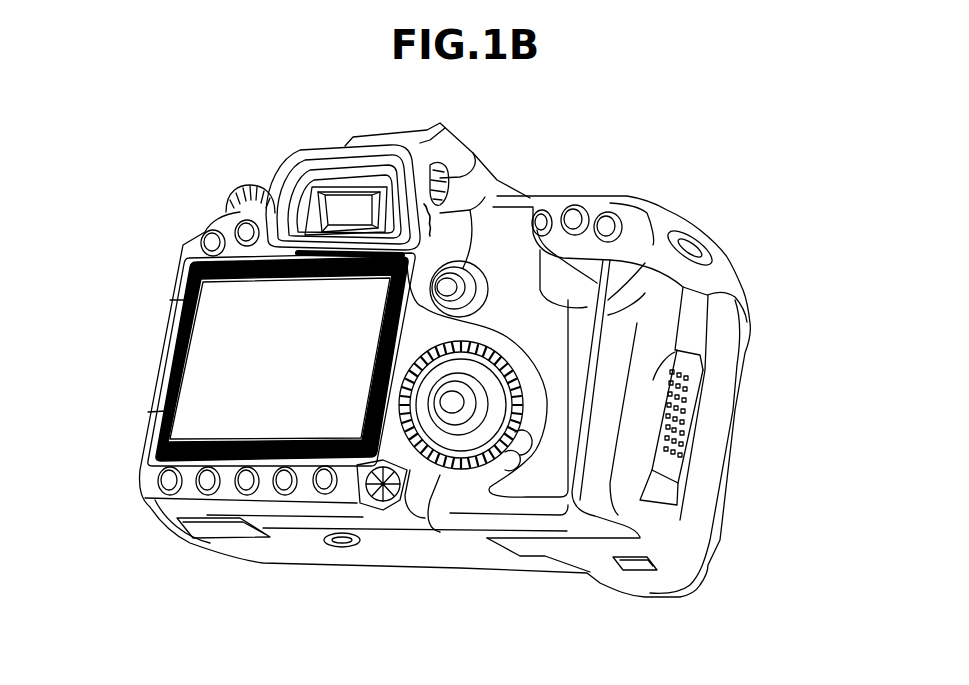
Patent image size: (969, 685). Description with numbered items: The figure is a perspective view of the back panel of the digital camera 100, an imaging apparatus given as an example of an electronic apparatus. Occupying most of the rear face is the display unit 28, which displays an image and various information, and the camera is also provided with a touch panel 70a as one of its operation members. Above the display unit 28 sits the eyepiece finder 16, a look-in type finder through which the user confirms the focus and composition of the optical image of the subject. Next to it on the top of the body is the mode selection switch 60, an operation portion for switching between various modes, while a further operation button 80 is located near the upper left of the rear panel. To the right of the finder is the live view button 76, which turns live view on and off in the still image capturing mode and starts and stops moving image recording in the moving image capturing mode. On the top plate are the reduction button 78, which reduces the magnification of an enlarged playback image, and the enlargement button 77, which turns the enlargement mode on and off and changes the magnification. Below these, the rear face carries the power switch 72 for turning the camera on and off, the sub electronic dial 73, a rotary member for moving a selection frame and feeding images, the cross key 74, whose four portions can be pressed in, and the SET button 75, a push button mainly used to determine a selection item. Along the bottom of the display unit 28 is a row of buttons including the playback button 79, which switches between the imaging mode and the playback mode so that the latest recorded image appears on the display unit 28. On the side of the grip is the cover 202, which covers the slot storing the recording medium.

The digital camera 100 is at (705, 190).
The eyepiece finder 16 is at (352, 220).
The mode selection switch 60 is at (240, 190).
The playback button 80 is at (200, 237).
The display unit 28 is at (203, 330).
The touch panel 70a is at (208, 383).
The live view (LV) button 76 is at (450, 284).
The reduction button 78 is at (575, 220).
The enlargement button 77 is at (608, 227).
The cover 202 is at (707, 353).
The playback button 79 is at (323, 480).
The power switch 72 is at (387, 500).
The sub electronic dial 73 is at (417, 447).
The cross key 74 is at (452, 405).
The SET button 75 is at (510, 455).